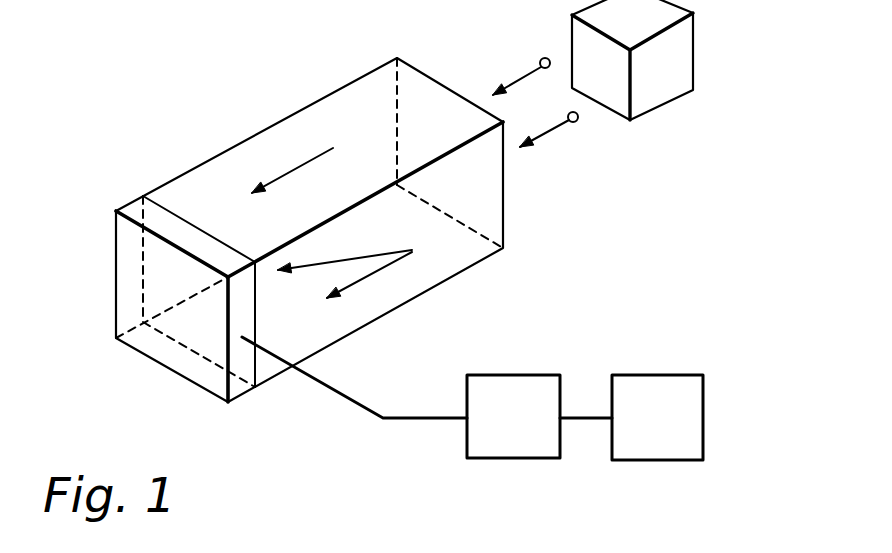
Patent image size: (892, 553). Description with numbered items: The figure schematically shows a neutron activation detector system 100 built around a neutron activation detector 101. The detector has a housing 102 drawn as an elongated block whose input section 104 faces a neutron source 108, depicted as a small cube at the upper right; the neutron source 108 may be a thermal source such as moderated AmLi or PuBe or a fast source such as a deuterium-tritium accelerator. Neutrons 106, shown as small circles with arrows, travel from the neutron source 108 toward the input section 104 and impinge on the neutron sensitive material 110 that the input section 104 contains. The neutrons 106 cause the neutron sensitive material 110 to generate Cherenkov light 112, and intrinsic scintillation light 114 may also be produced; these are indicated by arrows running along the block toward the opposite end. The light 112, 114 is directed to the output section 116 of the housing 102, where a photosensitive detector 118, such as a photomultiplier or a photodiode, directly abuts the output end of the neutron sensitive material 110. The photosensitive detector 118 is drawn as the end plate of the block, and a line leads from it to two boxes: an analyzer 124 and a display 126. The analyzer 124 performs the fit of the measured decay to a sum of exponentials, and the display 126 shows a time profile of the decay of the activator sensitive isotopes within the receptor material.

The neutron activation detector system 100 is at (590, 312).
The neutron activation detector 101 is at (313, 80).
The housing 102 is at (250, 137).
The input section 104 is at (503, 190).
The neutrons 106 is at (545, 58).
The neutron source 108 is at (665, 83).
The neutron sensitive material 110 is at (423, 298).
The Cherenkov light 112 is at (313, 157).
The intrinsic scintillation light 114 is at (346, 232).
The output section 116 is at (243, 393).
The photosensitive detector 118 is at (157, 208).
The analyzer 124 is at (523, 432).
The display 126 is at (668, 432).